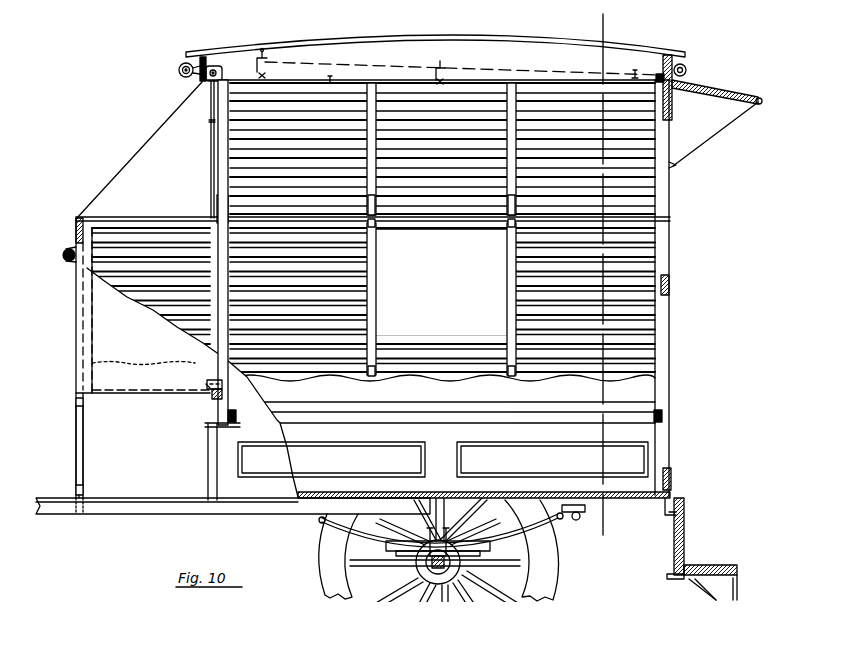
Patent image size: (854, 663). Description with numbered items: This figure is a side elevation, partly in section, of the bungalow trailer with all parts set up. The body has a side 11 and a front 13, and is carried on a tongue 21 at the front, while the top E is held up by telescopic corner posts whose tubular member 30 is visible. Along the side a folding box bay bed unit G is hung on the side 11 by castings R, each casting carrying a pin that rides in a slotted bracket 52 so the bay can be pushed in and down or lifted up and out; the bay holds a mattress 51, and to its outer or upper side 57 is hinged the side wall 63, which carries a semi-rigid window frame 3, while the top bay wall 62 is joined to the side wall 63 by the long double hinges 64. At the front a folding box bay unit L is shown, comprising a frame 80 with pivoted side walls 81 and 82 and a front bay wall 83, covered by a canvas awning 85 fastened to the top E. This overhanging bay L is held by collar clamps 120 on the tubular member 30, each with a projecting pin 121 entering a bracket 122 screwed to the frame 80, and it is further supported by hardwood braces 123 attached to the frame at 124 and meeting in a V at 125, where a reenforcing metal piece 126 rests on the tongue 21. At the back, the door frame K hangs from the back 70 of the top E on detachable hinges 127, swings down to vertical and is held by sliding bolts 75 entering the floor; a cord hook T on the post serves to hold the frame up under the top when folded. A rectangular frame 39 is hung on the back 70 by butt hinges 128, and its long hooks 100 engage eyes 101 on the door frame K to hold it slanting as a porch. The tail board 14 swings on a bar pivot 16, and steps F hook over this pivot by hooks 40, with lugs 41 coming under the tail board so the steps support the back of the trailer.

The top E is at (440, 38).
The cord hook T is at (275, 56).
The side 11 is at (604, 280).
The double hinge 64 is at (215, 207).
The canvas awning 85 is at (157, 123).
The top bay wall 62 is at (438, 147).
The side wall 63 is at (442, 300).
The side wall of front bay 82 is at (151, 286).
The window frame 3 is at (441, 282).
The back of top 70 is at (670, 58).
The butt hinge 128 is at (684, 72).
The detachable hinge 127 is at (658, 77).
The rectangular frame 39 is at (740, 93).
The long hook 100 is at (712, 126).
The eye 101 is at (676, 166).
The back door frame K is at (672, 285).
The front bay wall 83 is at (76, 315).
The side wall of front bay 81 is at (103, 363).
The folding box bay unit L is at (192, 382).
The frame 80 is at (143, 378).
The tubular member 30 is at (212, 358).
The projecting pin 121 is at (222, 385).
The collar clamp 120 is at (213, 398).
The bracket 122 is at (208, 386).
The brace attachment point 124 is at (76, 402).
The hardwood brace 123 is at (78, 439).
The brace point 125 is at (76, 489).
The reenforcing metal piece 126 is at (84, 496).
The front 13 is at (208, 459).
The outer or upper side of bed 57 is at (344, 380).
The mattress 51 is at (442, 389).
The folding box bay bed unit G is at (442, 405).
The casting R is at (657, 428).
The bracket 52 is at (234, 416).
The sliding bolt 75 is at (662, 483).
The tongue 21 is at (233, 506).
The hook 40 is at (675, 513).
The bar pivot 16 is at (676, 498).
The steps F is at (706, 565).
The tail board 14 is at (675, 544).
The lug 41 is at (684, 583).